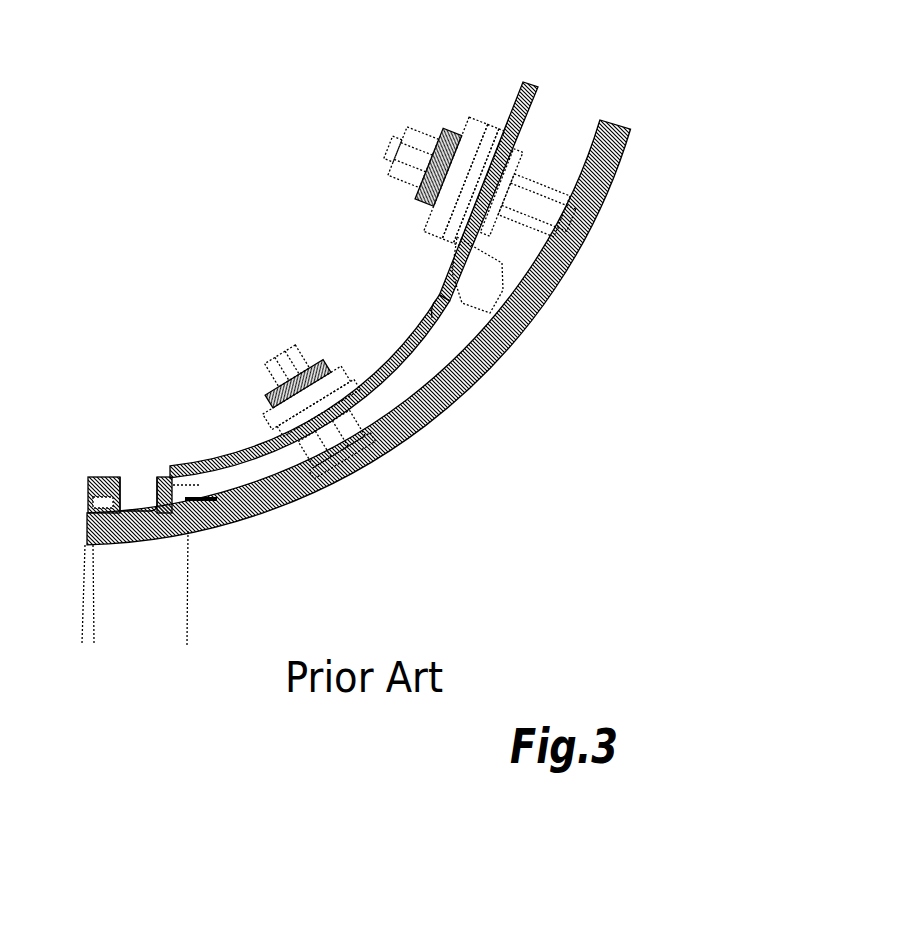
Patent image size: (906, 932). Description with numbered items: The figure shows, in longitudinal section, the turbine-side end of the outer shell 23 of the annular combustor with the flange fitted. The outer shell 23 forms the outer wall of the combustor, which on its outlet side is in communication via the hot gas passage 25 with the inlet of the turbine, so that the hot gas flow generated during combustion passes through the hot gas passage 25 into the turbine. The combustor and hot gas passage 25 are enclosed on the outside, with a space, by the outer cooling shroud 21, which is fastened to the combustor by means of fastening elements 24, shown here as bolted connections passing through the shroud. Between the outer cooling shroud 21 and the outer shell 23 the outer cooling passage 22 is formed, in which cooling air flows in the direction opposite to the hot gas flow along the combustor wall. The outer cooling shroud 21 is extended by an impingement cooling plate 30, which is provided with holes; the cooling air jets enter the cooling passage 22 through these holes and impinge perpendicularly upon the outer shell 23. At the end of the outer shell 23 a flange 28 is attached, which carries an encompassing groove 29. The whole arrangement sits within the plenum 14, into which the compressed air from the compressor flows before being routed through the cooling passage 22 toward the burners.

The plenum 14 is at (297, 245).
The outer cooling shroud 21 is at (513, 105).
The outer cooling passage 22 is at (562, 147).
The outer shell 23 is at (483, 352).
The fastening elements 24 is at (430, 157).
The hot gas passage 25 is at (509, 549).
The flange 28 is at (97, 439).
The encompassing groove 29 is at (137, 478).
The impingement cooling plate 30 is at (392, 362).